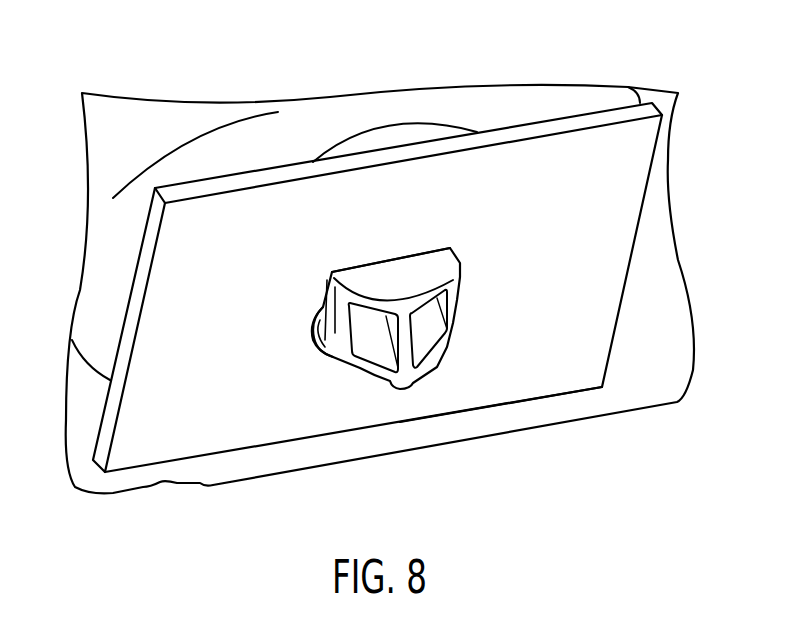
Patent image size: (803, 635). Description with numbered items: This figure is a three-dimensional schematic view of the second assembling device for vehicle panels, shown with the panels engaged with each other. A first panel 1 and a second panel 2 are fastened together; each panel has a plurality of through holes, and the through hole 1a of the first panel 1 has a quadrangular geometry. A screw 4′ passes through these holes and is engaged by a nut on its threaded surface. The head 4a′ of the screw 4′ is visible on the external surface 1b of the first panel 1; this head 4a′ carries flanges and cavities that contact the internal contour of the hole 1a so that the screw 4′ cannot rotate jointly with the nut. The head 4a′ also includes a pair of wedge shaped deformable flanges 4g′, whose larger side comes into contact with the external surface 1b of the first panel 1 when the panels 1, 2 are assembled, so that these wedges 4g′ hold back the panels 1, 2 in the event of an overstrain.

The first panel 1 is at (604, 254).
The through hole 1a is at (333, 270).
The external surface 1b is at (575, 360).
The second panel 2 is at (475, 85).
The screw 4′ is at (378, 336).
The head 4a′ is at (432, 340).
The wedge shaped deformable flanges 4g′ is at (320, 323).